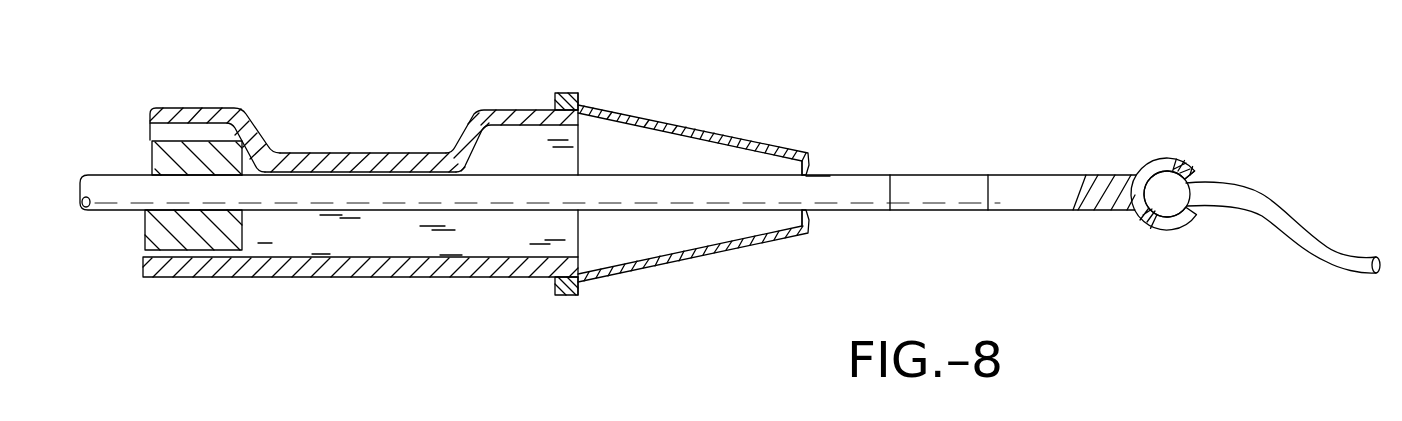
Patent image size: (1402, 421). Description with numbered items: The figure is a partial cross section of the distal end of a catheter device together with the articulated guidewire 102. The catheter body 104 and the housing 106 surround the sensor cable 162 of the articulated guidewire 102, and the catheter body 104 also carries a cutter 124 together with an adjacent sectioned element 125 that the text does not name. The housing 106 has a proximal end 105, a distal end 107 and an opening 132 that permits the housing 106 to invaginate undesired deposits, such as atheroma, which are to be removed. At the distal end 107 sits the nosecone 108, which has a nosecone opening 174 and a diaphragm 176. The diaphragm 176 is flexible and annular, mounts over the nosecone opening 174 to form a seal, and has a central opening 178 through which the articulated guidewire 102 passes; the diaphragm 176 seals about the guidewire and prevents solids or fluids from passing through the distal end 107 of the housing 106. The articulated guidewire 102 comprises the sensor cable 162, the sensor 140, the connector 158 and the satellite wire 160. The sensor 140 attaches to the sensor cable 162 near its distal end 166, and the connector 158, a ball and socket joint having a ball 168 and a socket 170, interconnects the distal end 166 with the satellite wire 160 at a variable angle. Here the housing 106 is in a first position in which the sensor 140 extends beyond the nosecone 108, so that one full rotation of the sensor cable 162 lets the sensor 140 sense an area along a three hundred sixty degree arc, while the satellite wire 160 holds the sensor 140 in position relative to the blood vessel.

The articulated guidewire 102 is at (1353, 247).
The catheter body 104 is at (205, 108).
The proximal end of housing 105 is at (160, 277).
The housing 106 is at (510, 110).
The distal end of housing 107 is at (583, 295).
The nosecone 108 is at (676, 124).
The cutter 124 is at (167, 140).
The lower seal block 125 is at (247, 250).
The opening 132 is at (412, 153).
The sensor 140 is at (953, 195).
The connector 158 is at (1168, 158).
The satellite wire 160 is at (1293, 217).
The sensor cable 162 is at (117, 187).
The distal end of sensor cable 166 is at (1027, 177).
The ball 168 is at (1178, 187).
The socket 170 is at (1193, 174).
The nosecone opening 174 is at (808, 212).
The diaphragm 176 is at (808, 174).
The central opening 178 is at (812, 173).